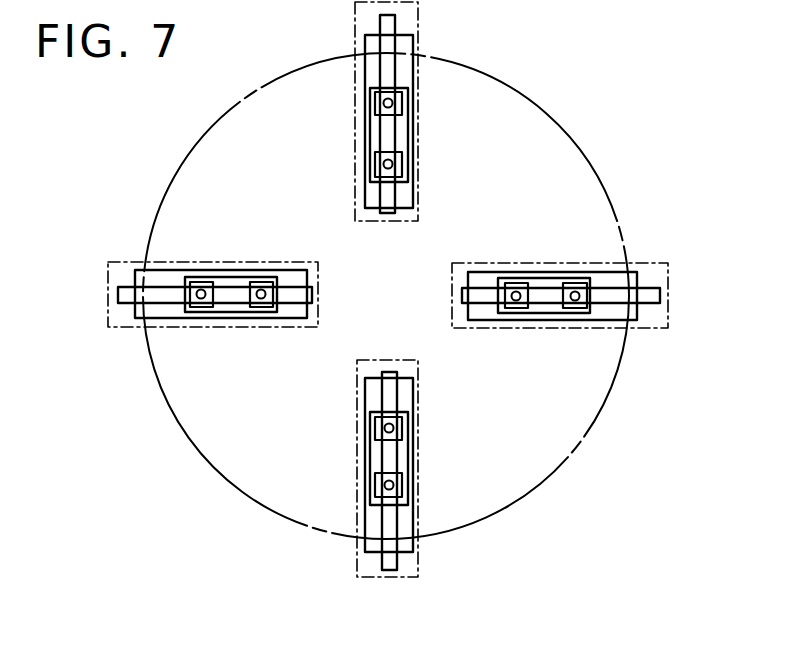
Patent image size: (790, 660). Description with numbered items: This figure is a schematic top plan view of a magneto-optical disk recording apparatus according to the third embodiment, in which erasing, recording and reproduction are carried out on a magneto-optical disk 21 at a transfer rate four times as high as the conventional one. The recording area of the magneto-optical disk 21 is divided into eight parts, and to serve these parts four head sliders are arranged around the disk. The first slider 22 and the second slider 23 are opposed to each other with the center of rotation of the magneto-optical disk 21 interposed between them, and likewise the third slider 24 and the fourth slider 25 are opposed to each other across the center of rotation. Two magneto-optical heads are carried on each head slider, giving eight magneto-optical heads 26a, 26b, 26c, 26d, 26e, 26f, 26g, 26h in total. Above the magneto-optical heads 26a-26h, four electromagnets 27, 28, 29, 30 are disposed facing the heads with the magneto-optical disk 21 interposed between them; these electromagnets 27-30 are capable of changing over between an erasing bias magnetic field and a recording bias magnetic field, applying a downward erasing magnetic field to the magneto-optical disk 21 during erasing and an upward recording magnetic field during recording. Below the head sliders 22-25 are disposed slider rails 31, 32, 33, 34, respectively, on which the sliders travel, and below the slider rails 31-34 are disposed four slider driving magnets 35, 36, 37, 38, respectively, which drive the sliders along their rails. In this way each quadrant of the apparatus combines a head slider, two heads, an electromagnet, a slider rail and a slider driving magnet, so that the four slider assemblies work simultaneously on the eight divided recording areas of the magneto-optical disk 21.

The magneto-optical disk 21 is at (582, 148).
The first slider 22 is at (545, 288).
The second slider 23 is at (232, 282).
The third slider 24 is at (395, 458).
The fourth slider 25 is at (393, 133).
The magneto-optical head 26a is at (574, 290).
The magneto-optical head 26b is at (514, 285).
The magneto-optical head 26c is at (201, 290).
The magneto-optical head 26d is at (262, 290).
The magneto-optical head 26e is at (393, 486).
The magneto-optical head 26f is at (393, 428).
The magneto-optical head 26g is at (394, 101).
The magneto-optical head 26h is at (394, 163).
The electromagnet 27 is at (495, 318).
The electromagnet 28 is at (285, 315).
The electromagnet 29 is at (405, 384).
The electromagnet 30 is at (357, 65).
The slider rail 31 is at (650, 293).
The slider rail 32 is at (296, 300).
The slider rail 33 is at (393, 568).
The slider rail 34 is at (395, 23).
The slider driving magnet 35 is at (630, 328).
The slider driving magnet 36 is at (117, 262).
The slider driving magnet 37 is at (357, 550).
The slider driving magnet 38 is at (355, 22).